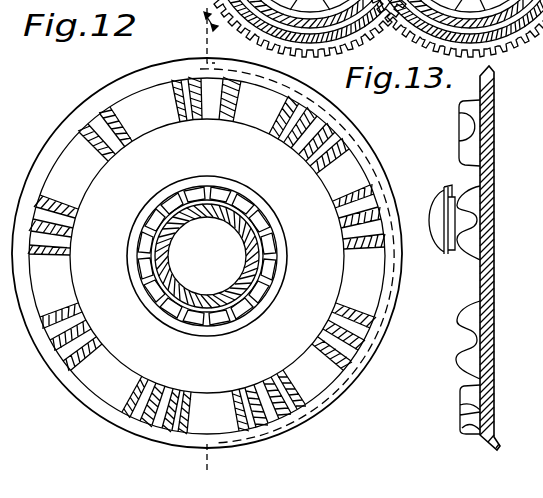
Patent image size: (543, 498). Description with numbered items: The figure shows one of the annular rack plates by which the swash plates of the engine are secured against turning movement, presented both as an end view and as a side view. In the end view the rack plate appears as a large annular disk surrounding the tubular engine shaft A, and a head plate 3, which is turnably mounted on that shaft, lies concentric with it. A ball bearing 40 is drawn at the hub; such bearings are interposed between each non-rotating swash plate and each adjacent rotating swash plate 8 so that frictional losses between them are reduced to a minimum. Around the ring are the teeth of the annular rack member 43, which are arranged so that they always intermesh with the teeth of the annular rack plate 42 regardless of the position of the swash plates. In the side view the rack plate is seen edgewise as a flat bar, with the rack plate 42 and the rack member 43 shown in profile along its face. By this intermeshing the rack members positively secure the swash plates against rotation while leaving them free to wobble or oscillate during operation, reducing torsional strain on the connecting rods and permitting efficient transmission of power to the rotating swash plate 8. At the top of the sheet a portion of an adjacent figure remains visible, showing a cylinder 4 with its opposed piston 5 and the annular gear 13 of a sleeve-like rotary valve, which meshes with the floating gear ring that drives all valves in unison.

In FIG. 12, the head plate 3 is at (207, 240).
In FIG. 13, the head plate 3 is at (483, 258).
In FIG. 12, the swash plate 8 is at (266, 228).
In FIG. 12, the ball bearing 40 is at (140, 228).
In FIG. 12, the annular rack member 43 is at (206, 255).
In FIG. 13, the annular rack member 43 is at (468, 306).
In FIG. 13, the annular rack plate 42 is at (444, 189).
In FIG. 12, the tubular engine shaft A is at (218, 281).
In FIG. 12, the cylinder 4 is at (432, 12).
In FIG. 12, the opposed piston 5 is at (310, 28).
In FIG. 12, the annular gear 13 is at (534, 46).